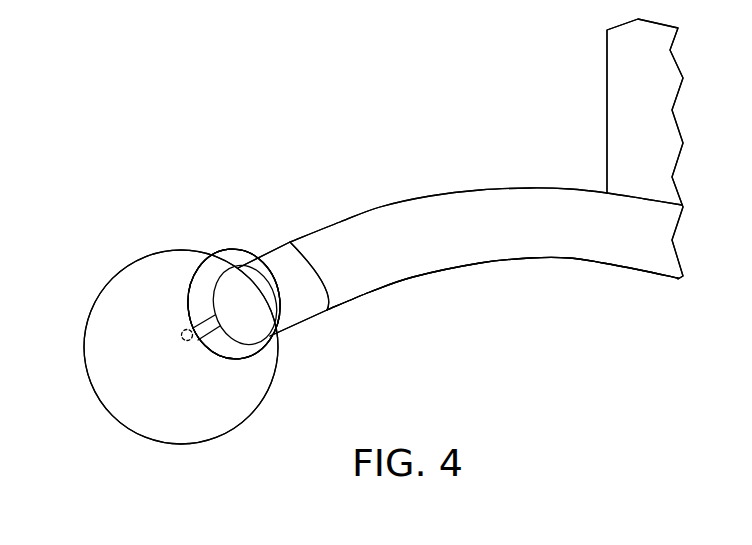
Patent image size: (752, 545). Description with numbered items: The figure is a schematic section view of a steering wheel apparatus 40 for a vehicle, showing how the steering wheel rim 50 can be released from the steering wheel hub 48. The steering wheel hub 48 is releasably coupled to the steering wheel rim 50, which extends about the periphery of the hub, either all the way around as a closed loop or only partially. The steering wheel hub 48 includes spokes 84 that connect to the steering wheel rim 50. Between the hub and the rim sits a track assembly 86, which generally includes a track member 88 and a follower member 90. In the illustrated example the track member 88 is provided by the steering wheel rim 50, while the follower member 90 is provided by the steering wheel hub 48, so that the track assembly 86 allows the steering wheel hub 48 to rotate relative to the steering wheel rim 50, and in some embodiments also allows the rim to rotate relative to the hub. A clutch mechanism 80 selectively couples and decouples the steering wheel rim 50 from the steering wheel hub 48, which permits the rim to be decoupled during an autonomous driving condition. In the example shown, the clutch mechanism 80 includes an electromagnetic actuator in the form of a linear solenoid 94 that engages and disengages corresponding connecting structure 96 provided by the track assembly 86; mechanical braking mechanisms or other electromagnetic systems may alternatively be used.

The steering wheel apparatus 40 is at (418, 98).
The steering wheel hub 48 is at (496, 257).
The steering wheel rim 50 is at (120, 437).
The clutch mechanism 80 is at (275, 251).
The spokes 84 is at (503, 190).
The track assembly 86 is at (218, 251).
The track member 88 is at (185, 292).
The follower member 90 is at (247, 353).
The linear solenoid 94 is at (213, 282).
The connecting structure 96 is at (190, 343).